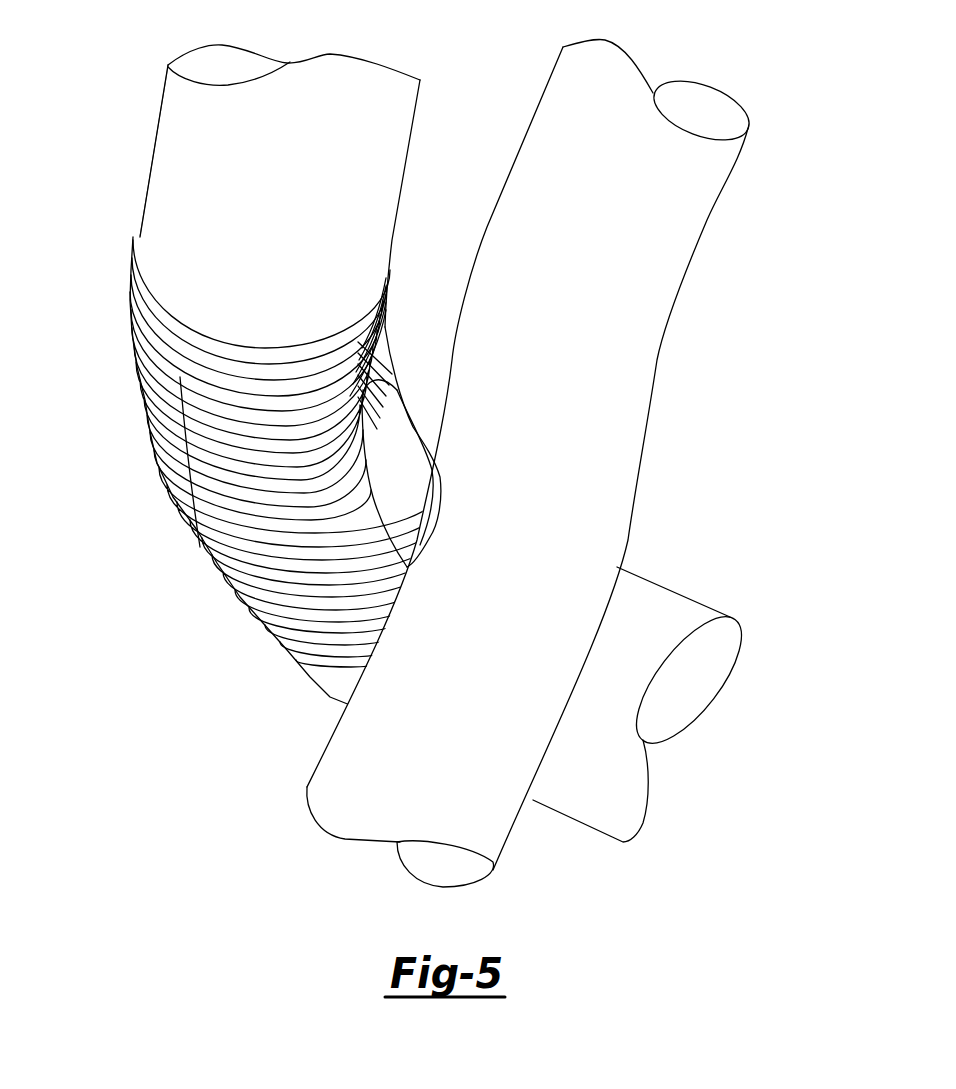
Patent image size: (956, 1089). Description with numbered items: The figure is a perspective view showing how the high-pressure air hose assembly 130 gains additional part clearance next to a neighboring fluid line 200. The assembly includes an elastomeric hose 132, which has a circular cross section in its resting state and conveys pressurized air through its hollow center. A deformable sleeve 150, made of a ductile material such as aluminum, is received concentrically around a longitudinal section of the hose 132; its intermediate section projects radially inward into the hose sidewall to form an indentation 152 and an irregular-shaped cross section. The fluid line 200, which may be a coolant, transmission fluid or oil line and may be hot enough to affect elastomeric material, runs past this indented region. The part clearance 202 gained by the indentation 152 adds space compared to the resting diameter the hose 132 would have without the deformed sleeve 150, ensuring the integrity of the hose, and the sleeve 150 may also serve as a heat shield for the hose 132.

The high-pressure air hose assembly 130 is at (180, 118).
The elastomeric hose 132 is at (173, 197).
The deformable sleeve 150 is at (170, 408).
The indentation 152 is at (393, 452).
The fluid line 200 is at (673, 210).
The part clearance 202 is at (357, 385).